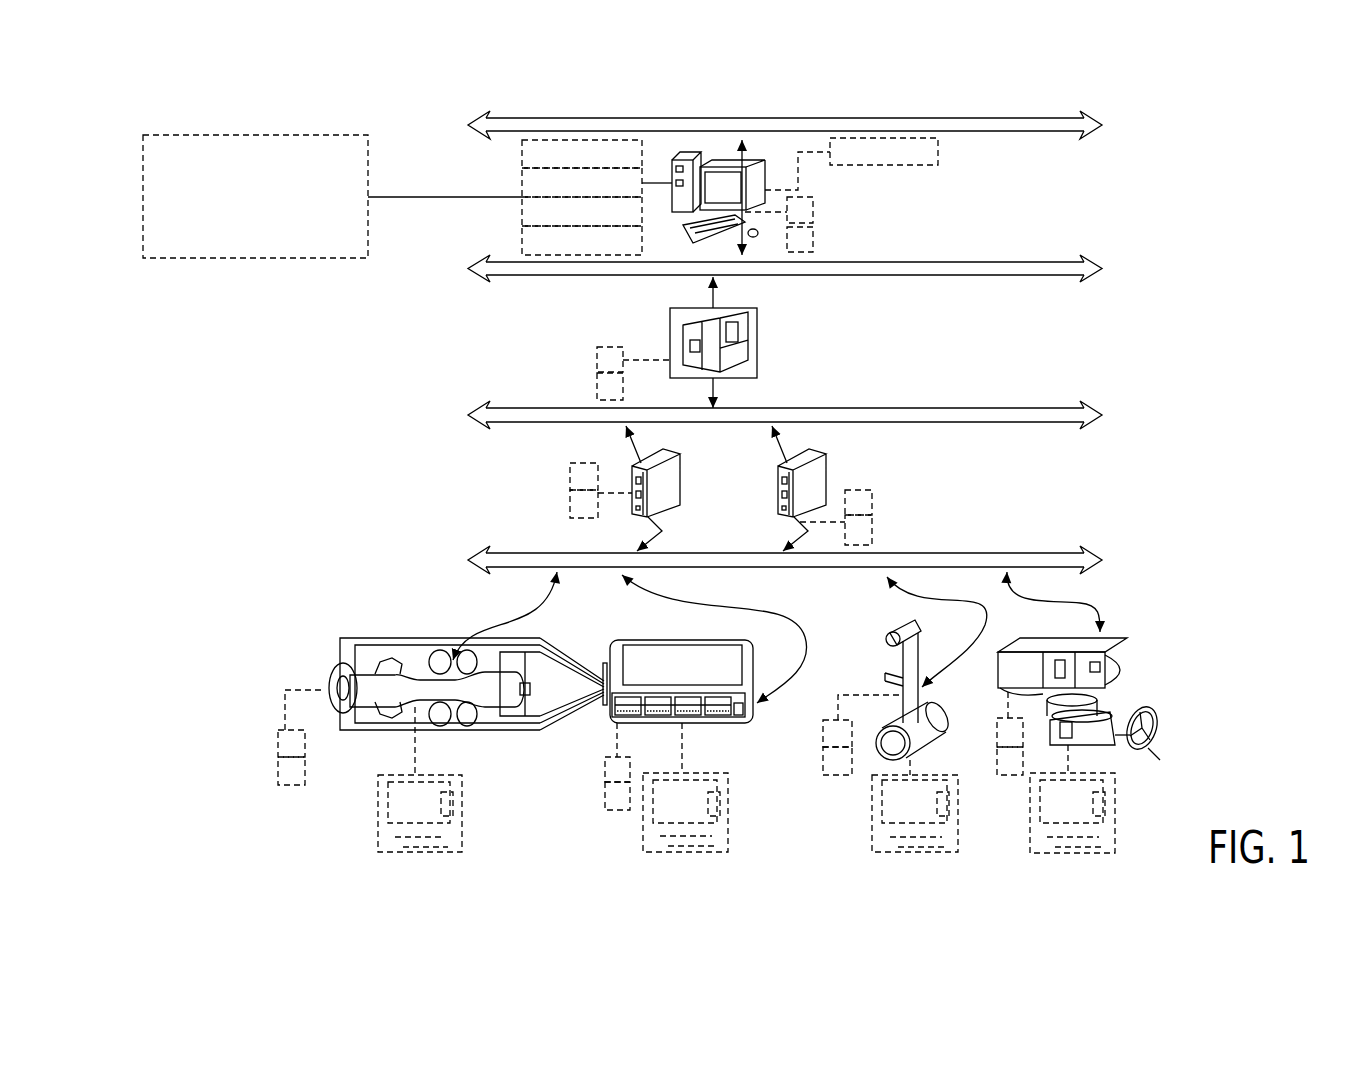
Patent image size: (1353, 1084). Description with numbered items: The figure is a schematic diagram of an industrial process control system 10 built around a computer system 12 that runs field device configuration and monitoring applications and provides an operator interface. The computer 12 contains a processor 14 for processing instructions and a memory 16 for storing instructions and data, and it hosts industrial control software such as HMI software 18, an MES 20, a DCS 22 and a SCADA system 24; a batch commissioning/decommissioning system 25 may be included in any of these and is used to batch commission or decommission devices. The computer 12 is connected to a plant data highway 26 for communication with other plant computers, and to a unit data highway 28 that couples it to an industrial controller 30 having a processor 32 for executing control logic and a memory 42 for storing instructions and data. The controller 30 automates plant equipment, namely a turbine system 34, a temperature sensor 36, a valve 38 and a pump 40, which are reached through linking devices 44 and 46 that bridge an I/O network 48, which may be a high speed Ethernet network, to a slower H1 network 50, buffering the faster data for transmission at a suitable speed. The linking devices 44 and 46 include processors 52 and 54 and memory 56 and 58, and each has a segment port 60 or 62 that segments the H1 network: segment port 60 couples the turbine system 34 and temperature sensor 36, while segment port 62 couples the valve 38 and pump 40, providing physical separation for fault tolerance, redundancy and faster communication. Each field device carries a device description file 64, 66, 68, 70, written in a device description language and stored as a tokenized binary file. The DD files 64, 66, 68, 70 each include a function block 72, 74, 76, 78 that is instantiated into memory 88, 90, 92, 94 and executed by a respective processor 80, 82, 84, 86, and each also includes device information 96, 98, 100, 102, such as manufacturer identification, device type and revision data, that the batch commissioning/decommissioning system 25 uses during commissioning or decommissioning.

The industrial process control system 10 is at (1190, 120).
The computer system 12 is at (766, 190).
The processor 14 is at (803, 197).
The memory 16 is at (813, 240).
The human-machine interface (HMI) software 18 is at (522, 156).
The manufacturing execution system (MES) 20 is at (522, 184).
The distributed control system (DCS) 22 is at (522, 213).
The supervisor control and data acquisition (SCADA) system 24 is at (522, 242).
The batch commissioning/decommissioning system 25 is at (143, 196).
The plant data highway 26 is at (1092, 119).
The unit data highway 28 is at (1092, 263).
The industrial controller 30 is at (757, 340).
The processor 32 is at (603, 347).
The turbine system 34 is at (495, 740).
The temperature sensor 36 is at (710, 723).
The valve 38 is at (920, 748).
The pump 40 is at (1157, 740).
The memory 42 is at (597, 388).
The linking device 44 is at (672, 482).
The linking device 46 is at (818, 482).
The I/O network 48 is at (1095, 413).
The H1 network 50 is at (1095, 553).
The processor 52 is at (577, 463).
The processor 54 is at (872, 497).
The memory 56 is at (570, 502).
The memory 58 is at (872, 525).
The segment port 60 is at (627, 515).
The segment port 62 is at (773, 515).
The device description (DD) file 64 is at (420, 855).
The device description (DD) file 66 is at (690, 855).
The device description (DD) file 68 is at (914, 855).
The device description (DD) file 70 is at (1072, 855).
The function block 72 is at (452, 808).
The function block 74 is at (719, 808).
The function block 76 is at (882, 808).
The function block 78 is at (1104, 808).
The processor 80 is at (280, 742).
The processor 82 is at (630, 770).
The processor 84 is at (825, 732).
The processor 86 is at (998, 730).
The memory 88 is at (280, 775).
The memory 90 is at (605, 795).
The memory 92 is at (825, 765).
The memory 94 is at (997, 765).
The device information 96 is at (398, 845).
The device information 98 is at (663, 843).
The device information 100 is at (938, 150).
The device information 102 is at (1048, 845).